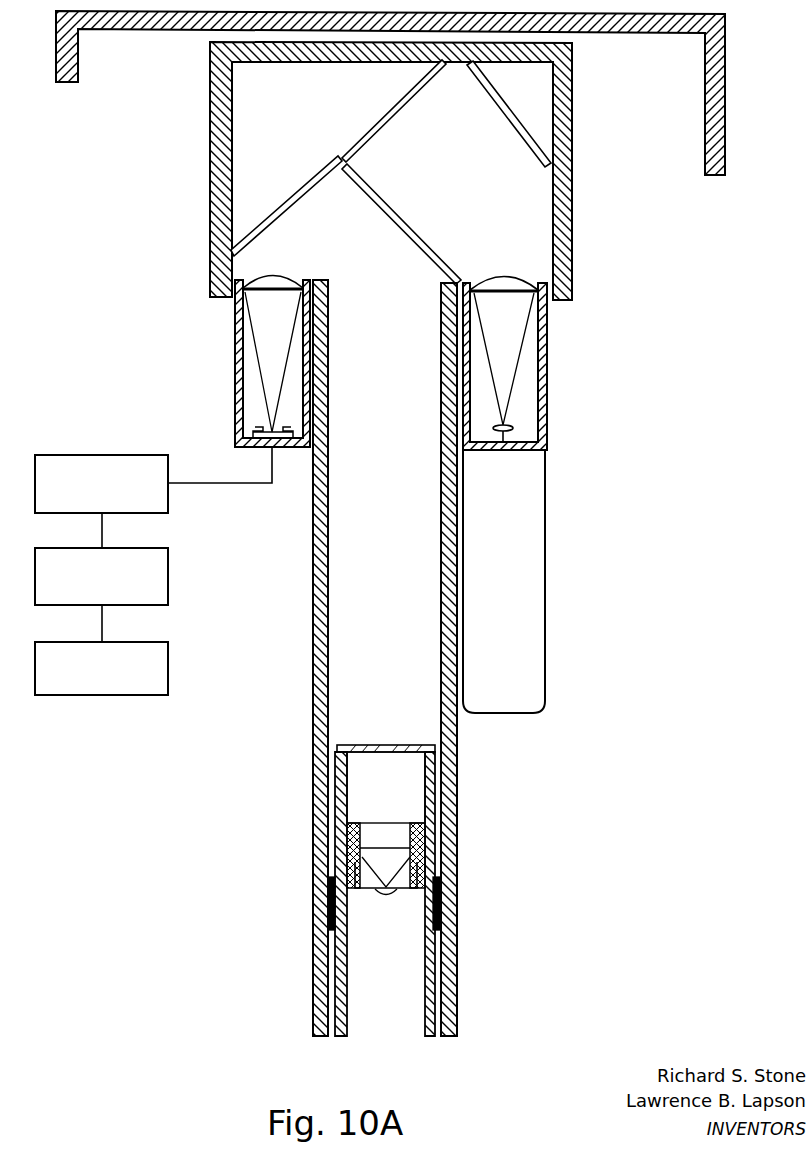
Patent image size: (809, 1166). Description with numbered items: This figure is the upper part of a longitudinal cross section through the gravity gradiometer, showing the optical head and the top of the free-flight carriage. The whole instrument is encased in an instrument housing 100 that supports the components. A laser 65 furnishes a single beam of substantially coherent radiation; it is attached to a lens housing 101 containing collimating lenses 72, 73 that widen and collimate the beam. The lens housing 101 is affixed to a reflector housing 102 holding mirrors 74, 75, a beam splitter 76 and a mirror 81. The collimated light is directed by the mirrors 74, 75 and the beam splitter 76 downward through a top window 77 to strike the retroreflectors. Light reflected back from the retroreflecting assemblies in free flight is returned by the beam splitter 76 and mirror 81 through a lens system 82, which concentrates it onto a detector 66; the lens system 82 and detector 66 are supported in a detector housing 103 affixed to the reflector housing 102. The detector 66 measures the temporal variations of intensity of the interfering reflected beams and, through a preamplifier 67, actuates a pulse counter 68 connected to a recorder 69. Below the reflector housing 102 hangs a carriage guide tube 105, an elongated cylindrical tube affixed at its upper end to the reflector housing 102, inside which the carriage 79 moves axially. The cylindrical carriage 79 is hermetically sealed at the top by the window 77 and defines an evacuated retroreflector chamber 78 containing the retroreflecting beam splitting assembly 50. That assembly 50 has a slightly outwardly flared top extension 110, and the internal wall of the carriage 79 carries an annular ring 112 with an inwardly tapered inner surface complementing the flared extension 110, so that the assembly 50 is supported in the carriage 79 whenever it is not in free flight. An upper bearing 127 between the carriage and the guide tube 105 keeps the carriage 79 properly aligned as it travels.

The instrument housing 100 is at (726, 80).
The reflector housing 102 is at (560, 186).
The mirror 74 is at (548, 131).
The mirror 75 is at (386, 113).
The beam splitter 76 is at (410, 228).
The mirror 81 is at (323, 183).
The collimating lens 73 is at (520, 276).
The lens system 82 is at (240, 276).
The detector housing 103 is at (236, 345).
The detector 66 is at (265, 430).
The lens housing 101 is at (548, 373).
The collimating lens 72 is at (515, 428).
The laser 65 is at (521, 567).
The carriage guide tube 105 is at (314, 547).
The preamplifier 67 is at (168, 510).
The pulse counter 68 is at (168, 601).
The recorder 69 is at (168, 691).
The top window 77 is at (368, 745).
The retroreflector chamber 78 is at (413, 774).
The carriage 79 is at (418, 803).
The retroreflecting beam splitting assembly 50 is at (392, 848).
The flared top extension 110 is at (416, 866).
The annular ring 112 is at (345, 852).
The upper bearing 127 is at (328, 896).